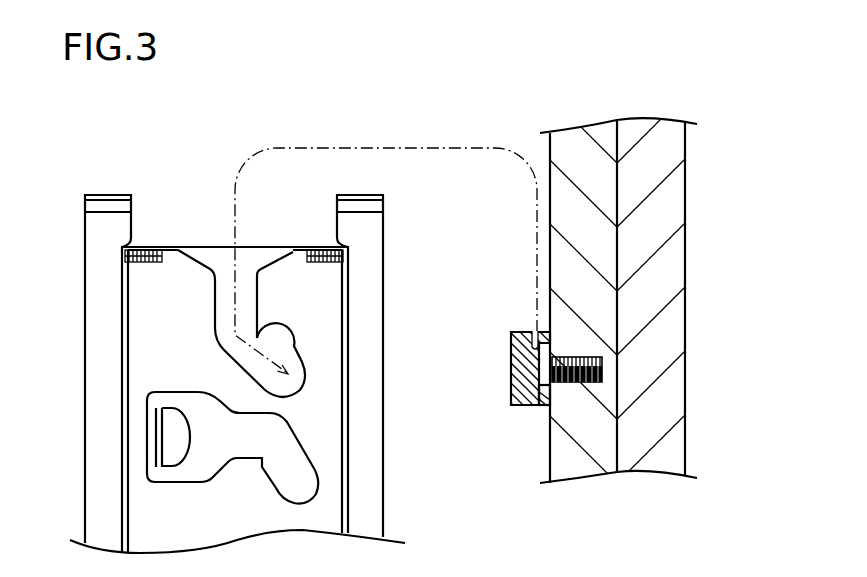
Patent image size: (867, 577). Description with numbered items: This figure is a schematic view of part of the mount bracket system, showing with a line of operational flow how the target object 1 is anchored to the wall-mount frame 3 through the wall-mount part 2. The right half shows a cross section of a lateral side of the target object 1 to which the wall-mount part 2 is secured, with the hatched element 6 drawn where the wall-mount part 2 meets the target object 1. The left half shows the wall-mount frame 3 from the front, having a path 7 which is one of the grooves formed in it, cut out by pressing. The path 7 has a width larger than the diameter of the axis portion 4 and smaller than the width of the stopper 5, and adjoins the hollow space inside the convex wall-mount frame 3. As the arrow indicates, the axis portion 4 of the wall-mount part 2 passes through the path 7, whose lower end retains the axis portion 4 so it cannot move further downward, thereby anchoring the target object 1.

The target object 1 is at (668, 200).
The wall-mount part 2 is at (526, 375).
The wall-mount frame 3 is at (107, 193).
The axis portion 4 is at (538, 398).
The stopper 5 is at (521, 406).
The fixing screw 6 is at (602, 373).
The path 7 is at (216, 303).